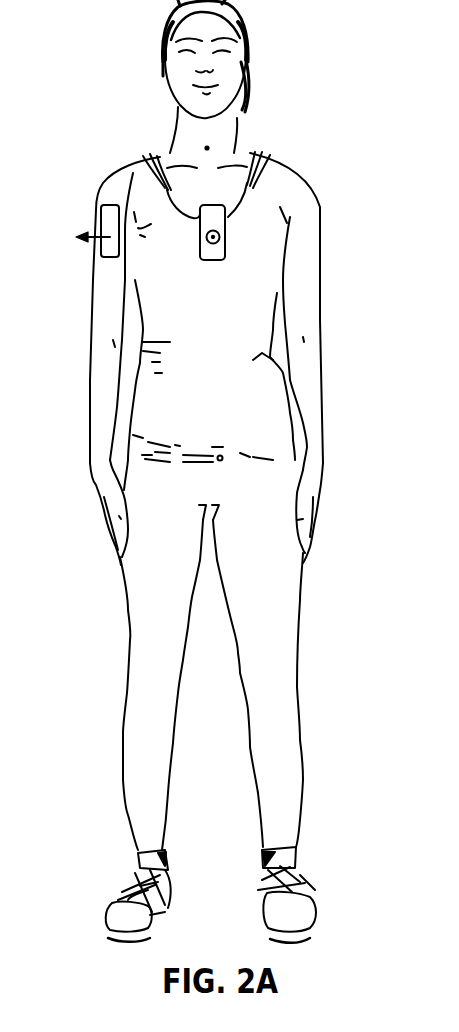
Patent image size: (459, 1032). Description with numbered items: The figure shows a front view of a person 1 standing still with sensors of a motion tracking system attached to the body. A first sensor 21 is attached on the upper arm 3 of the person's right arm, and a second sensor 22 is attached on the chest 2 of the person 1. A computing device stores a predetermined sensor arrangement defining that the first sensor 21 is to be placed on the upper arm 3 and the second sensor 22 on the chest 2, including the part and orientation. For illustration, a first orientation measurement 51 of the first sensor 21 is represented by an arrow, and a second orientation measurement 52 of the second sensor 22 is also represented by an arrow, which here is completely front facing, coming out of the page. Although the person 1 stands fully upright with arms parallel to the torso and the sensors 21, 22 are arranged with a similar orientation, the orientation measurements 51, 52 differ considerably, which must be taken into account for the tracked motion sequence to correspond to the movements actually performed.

The person 1 is at (287, 72).
The chest 2 is at (217, 277).
The upper arm 3 is at (113, 280).
The first sensor 21 is at (113, 232).
The second sensor 22 is at (213, 219).
The first orientation measurement 51 is at (84, 270).
The second orientation measurement 52 is at (224, 238).